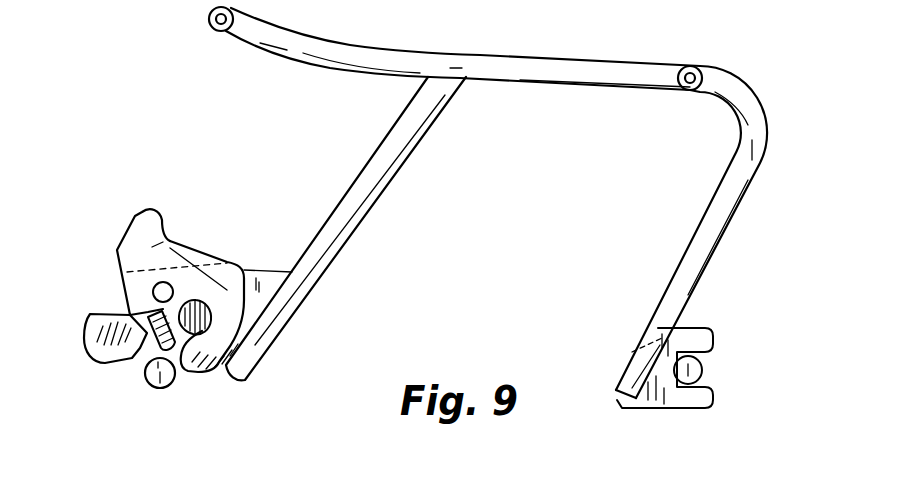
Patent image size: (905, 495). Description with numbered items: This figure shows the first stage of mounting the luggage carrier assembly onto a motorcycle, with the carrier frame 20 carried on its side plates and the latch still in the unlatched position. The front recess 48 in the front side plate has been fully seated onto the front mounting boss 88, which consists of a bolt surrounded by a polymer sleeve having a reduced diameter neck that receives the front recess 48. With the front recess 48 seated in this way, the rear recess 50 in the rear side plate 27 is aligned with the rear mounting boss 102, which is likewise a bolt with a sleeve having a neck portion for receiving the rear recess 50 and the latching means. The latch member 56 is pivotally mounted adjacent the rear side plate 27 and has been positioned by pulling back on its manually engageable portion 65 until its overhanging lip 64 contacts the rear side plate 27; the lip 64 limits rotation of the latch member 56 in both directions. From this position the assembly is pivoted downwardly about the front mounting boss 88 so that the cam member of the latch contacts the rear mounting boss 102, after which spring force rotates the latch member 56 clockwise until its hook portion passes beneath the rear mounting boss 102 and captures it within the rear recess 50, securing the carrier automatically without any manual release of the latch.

The frame assembly 20 is at (743, 71).
The rear side plate 27 is at (95, 312).
The front recess 48 is at (715, 355).
The rear recess 50 is at (140, 357).
The latch member 56 is at (240, 264).
The overhanging lip 64 is at (135, 271).
The manually engageable portion 65 is at (148, 209).
The front mounting boss 88 is at (688, 370).
The rear mounting boss 102 is at (162, 388).